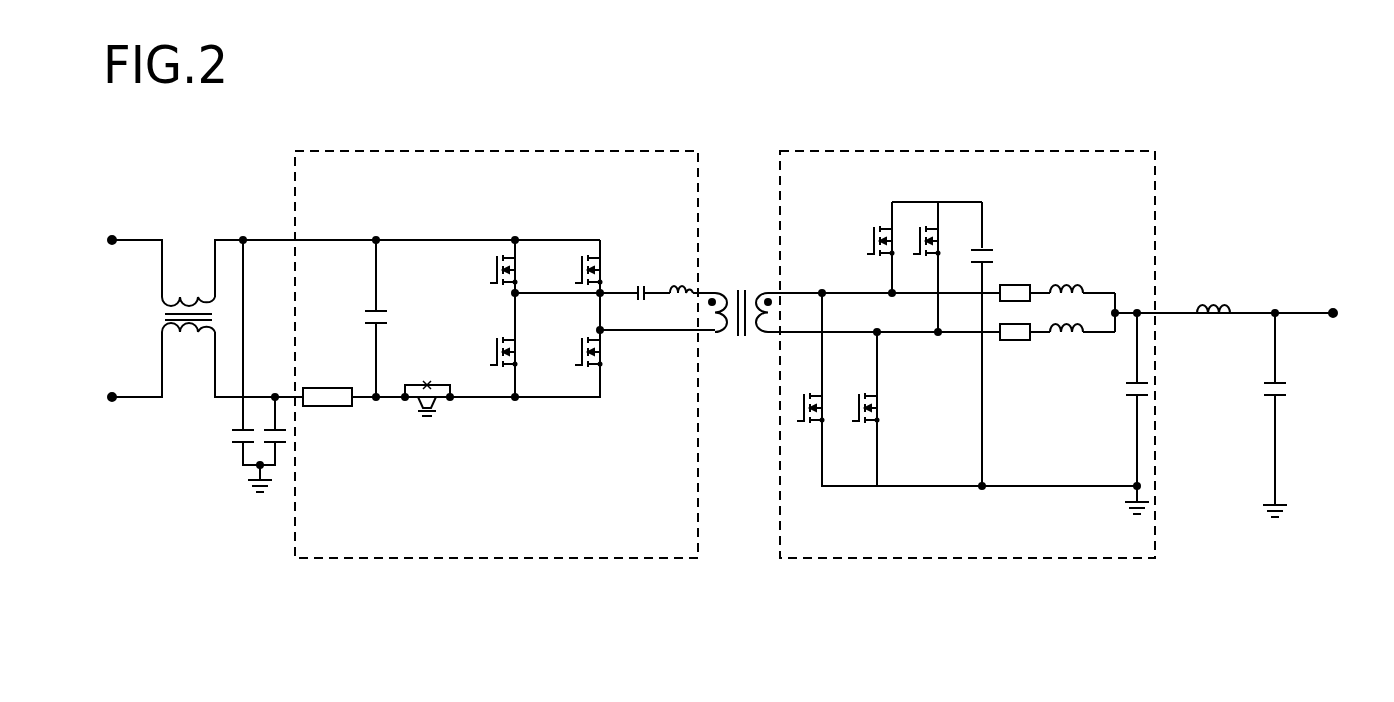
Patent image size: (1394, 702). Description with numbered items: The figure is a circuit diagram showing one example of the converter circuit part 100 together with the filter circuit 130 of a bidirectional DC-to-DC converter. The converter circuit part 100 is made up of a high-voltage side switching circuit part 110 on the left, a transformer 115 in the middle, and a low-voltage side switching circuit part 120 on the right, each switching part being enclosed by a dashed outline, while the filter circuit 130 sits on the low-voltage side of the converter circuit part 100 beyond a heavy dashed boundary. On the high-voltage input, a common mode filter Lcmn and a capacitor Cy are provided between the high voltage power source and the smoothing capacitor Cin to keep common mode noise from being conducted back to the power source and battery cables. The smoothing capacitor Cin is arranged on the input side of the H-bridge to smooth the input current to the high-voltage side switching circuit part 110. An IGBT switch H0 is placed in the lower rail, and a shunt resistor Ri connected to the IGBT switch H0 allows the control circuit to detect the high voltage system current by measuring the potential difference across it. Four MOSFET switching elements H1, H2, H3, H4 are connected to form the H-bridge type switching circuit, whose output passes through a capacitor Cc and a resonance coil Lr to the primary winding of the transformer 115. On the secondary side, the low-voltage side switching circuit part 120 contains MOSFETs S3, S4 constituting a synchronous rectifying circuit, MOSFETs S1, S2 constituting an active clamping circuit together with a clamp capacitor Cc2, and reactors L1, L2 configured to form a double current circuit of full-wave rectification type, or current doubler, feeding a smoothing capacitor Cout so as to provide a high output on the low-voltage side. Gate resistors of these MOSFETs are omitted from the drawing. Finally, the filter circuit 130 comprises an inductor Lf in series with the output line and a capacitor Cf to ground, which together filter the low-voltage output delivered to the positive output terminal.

The converter circuit part 100 is at (731, 331).
The high-voltage side switching circuit part 110 is at (505, 320).
The transformer 115 is at (742, 347).
The low-voltage side switching circuit part 120 is at (1056, 320).
The filter circuit 130 is at (1240, 356).
The common mode filter Lcmn is at (346, 318).
The capacitor Cy is at (244, 364).
The shunt resistor Ri is at (354, 414).
The smoothing capacitor Cin is at (359, 318).
The IGBT switch H0 is at (458, 413).
The MOSFET (switching element) H1 is at (497, 286).
The MOSFET (switching element) H2 is at (497, 366).
The MOSFET (switching element) H3 is at (584, 289).
The MOSFET (switching element) H4 is at (584, 366).
The capacitor Cc is at (646, 278).
The resonance coil Lr is at (691, 274).
The MOSFET (switching element) S1 is at (875, 258).
The MOSFET (switching element) S2 is at (923, 258).
The MOSFET (switching element) S3 is at (805, 424).
The MOSFET (switching element) S4 is at (860, 424).
The capacitor Cc2 is at (995, 241).
The reactor L1 is at (1057, 274).
The reactor L2 is at (1057, 347).
The smoothing capacitor Cout is at (1103, 412).
The inductor Lf is at (1213, 290).
The capacitor Cf is at (1260, 413).